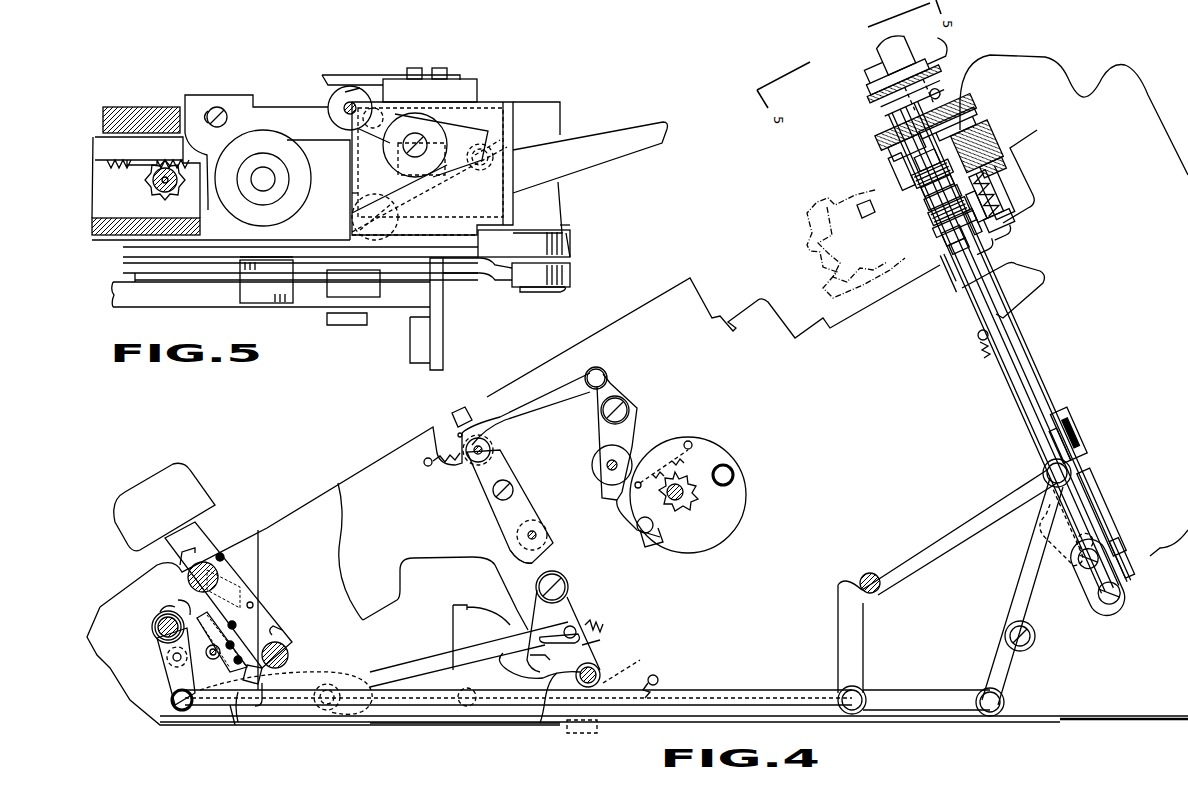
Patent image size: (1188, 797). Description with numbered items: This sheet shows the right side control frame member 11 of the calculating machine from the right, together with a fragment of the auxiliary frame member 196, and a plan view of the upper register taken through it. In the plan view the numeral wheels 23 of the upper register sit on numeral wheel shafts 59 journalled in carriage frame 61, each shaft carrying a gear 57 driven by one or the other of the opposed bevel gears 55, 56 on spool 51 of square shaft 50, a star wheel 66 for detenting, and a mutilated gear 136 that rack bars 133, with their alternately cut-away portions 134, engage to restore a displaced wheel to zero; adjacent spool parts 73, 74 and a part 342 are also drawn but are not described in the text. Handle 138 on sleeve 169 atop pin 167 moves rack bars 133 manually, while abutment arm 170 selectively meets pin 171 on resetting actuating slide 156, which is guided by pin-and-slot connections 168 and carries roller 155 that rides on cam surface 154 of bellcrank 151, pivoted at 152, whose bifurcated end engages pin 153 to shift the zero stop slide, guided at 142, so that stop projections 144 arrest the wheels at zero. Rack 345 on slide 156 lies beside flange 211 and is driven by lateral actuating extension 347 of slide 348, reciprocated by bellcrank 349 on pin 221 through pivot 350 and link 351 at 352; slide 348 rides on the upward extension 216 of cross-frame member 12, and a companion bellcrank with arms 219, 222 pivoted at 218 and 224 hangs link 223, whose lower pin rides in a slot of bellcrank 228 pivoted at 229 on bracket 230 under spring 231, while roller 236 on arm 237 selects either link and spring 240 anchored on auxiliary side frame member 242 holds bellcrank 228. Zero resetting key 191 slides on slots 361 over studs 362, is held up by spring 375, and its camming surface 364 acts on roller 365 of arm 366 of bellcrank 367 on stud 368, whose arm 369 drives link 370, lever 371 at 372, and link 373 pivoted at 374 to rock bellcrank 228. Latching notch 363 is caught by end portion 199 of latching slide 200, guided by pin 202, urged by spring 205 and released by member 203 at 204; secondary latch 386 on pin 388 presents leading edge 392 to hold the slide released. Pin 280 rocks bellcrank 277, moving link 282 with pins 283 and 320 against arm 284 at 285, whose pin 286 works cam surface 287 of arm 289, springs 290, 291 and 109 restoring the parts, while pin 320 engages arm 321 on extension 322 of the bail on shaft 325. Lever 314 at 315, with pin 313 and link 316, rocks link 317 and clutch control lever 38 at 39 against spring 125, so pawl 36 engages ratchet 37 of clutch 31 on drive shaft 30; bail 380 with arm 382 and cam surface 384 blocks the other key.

In FIG. 5, the right side control frame member 11 is at (436, 320).
In FIG. 4, the right side control frame member 11 is at (256, 535).
In FIG. 5, the cross-frame member 12 is at (131, 300).
In FIG. 4, the cross-frame member 12 is at (926, 262).
In FIG. 5, the numeral wheels 23 is at (299, 204).
In FIG. 4, the numeral wheels 23 is at (885, 96).
In FIG. 4, the transverse drive shaft 30 is at (684, 492).
In FIG. 4, the clutch 31 is at (734, 455).
In FIG. 4, the clutch pawl 36 is at (618, 531).
In FIG. 4, the ratchet 37 is at (684, 478).
In FIG. 4, the clutch control lever 38 is at (630, 418).
In FIG. 4, the pivot 39 is at (622, 405).
In FIG. 4, the square shaft 50 is at (1013, 170).
In FIG. 4, the spool 51 is at (951, 195).
In FIG. 4, the bevel gear 55 is at (950, 215).
In FIG. 4, the bevel gear 56 is at (975, 193).
In FIG. 4, the numeral wheel gear 57 is at (968, 175).
In FIG. 5, the numeral wheel shaft 59 is at (165, 193).
In FIG. 4, the numeral wheel shaft 59 is at (905, 155).
In FIG. 5, the carriage frame 61 is at (540, 112).
In FIG. 4, the carriage frame 61 is at (960, 132).
In FIG. 4, the star wheel 66 is at (975, 145).
In FIG. 4, the lip 73 is at (985, 205).
In FIG. 4, the lip 74 is at (985, 220).
In FIG. 4, the spring 109 is at (466, 694).
In FIG. 4, the spring 125 is at (450, 461).
In FIG. 5, the rack bars 133 is at (138, 165).
In FIG. 4, the rack bars 133 is at (951, 118).
In FIG. 5, the cut-away portions 134 is at (157, 152).
In FIG. 5, the mutilated gear 136 is at (150, 190).
In FIG. 4, the mutilated gear 136 is at (893, 146).
In FIG. 5, the handle 138 is at (478, 118).
In FIG. 4, the handle 138 is at (901, 58).
In FIG. 5, the pin-and-slot connection 142 is at (221, 108).
In FIG. 5, the stop projection 144 is at (208, 196).
In FIG. 5, the bellcrank 151 is at (352, 193).
In FIG. 5, the pivot 152 is at (398, 215).
In FIG. 5, the pin 153 is at (357, 130).
In FIG. 5, the cam surface 154 is at (500, 140).
In FIG. 5, the roller 155 is at (480, 168).
In FIG. 5, the resetting actuating slide 156 is at (497, 212).
In FIG. 4, the resetting actuating slide 156 is at (878, 108).
In FIG. 4, the pin 167 is at (949, 108).
In FIG. 4, the pin-and-slot connections 168 is at (886, 140).
In FIG. 4, the sleeve 169 is at (918, 70).
In FIG. 5, the abutment arm 170 is at (378, 145).
In FIG. 4, the abutment arm 170 is at (926, 80).
In FIG. 5, the pin 171 is at (347, 105).
In FIG. 4, the pin 171 is at (936, 92).
In FIG. 4, the zero resetting key 191 is at (200, 481).
In FIG. 4, the auxiliary frame member 196 is at (316, 501).
In FIG. 4, the end portion 199 is at (273, 729).
In FIG. 4, the latching slide 200 is at (414, 726).
In FIG. 4, the pin 202 is at (329, 680).
In FIG. 4, the latch-releasing member 203 is at (1040, 607).
In FIG. 4, the pivot 204 is at (1033, 642).
In FIG. 4, the spring 205 is at (645, 678).
In FIG. 5, the flange 211 is at (176, 298).
In FIG. 4, the upwardly extended portion 216 is at (920, 225).
In FIG. 5, the pivot 218 is at (263, 304).
In FIG. 5, the arm 219 is at (300, 305).
In FIG. 4, the pin 221 is at (946, 275).
In FIG. 5, the arm 222 is at (483, 274).
In FIG. 5, the link 223 is at (570, 275).
In FIG. 4, the link 223 is at (961, 285).
In FIG. 5, the pivot 224 is at (570, 285).
In FIG. 4, the bellcrank 228 is at (1086, 485).
In FIG. 4, the pivot 229 is at (1135, 536).
In FIG. 4, the bracket 230 is at (1124, 596).
In FIG. 4, the spring 231 is at (984, 346).
In FIG. 4, the roller 236 is at (1061, 430).
In FIG. 4, the arm 237 is at (1068, 442).
In FIG. 4, the spring 240 is at (1116, 520).
In FIG. 4, the auxiliary side frame member 242 is at (1039, 306).
In FIG. 4, the bellcrank 277 is at (162, 612).
In FIG. 4, the pin 280 is at (236, 596).
In FIG. 4, the link 282 is at (406, 629).
In FIG. 4, the pin 283 is at (573, 628).
In FIG. 4, the arm 284 is at (582, 648).
In FIG. 4, the pivot 285 is at (562, 590).
In FIG. 4, the pin 286 is at (600, 672).
In FIG. 4, the cam surface 287 is at (541, 724).
In FIG. 4, the arm 289 is at (453, 614).
In FIG. 4, the spring 290 is at (580, 658).
In FIG. 4, the spring 291 is at (600, 624).
In FIG. 4, the pin 313 is at (536, 535).
In FIG. 4, the lever 314 is at (520, 498).
In FIG. 4, the pivot 315 is at (509, 490).
In FIG. 4, the link 316 is at (540, 554).
In FIG. 4, the link 317 is at (540, 395).
In FIG. 4, the pin 320 is at (533, 645).
In FIG. 4, the arm 321 is at (505, 674).
In FIG. 4, the lateral extension 322 is at (561, 735).
In FIG. 4, the shaft 325 is at (600, 684).
In FIG. 4, the spring 342 is at (1104, 505).
In FIG. 5, the rack 345 is at (236, 226).
In FIG. 4, the lateral actuating extension 347 is at (895, 170).
In FIG. 5, the slide 348 is at (135, 278).
In FIG. 4, the slide 348 is at (906, 196).
In FIG. 5, the bellcrank 349 is at (485, 256).
In FIG. 4, the bellcrank 349 is at (925, 240).
In FIG. 5, the pivotal connection 350 is at (287, 246).
In FIG. 4, the pivotal connection 350 is at (913, 210).
In FIG. 5, the link 351 is at (570, 247).
In FIG. 4, the link 351 is at (968, 250).
In FIG. 5, the pivot 352 is at (566, 229).
In FIG. 4, the pivot 352 is at (958, 240).
In FIG. 4, the slots 361 is at (197, 548).
In FIG. 4, the studs 362 is at (224, 558).
In FIG. 4, the latching notch 363 is at (262, 706).
In FIG. 4, the camming surface 364 is at (245, 678).
In FIG. 4, the roller 365 is at (212, 660).
In FIG. 4, the arm 366 is at (190, 598).
In FIG. 4, the bellcrank 367 is at (155, 630).
In FIG. 4, the stud 368 is at (158, 638).
In FIG. 4, the arm 369 is at (166, 677).
In FIG. 4, the link 370 is at (704, 691).
In FIG. 4, the lever 371 is at (936, 531).
In FIG. 4, the pivot 372 is at (871, 578).
In FIG. 4, the link 373 is at (1057, 513).
In FIG. 4, the pivot 374 is at (1131, 562).
In FIG. 4, the spring 375 is at (228, 573).
In FIG. 4, the bail 380 is at (183, 560).
In FIG. 4, the arm 382 is at (232, 585).
In FIG. 4, the cam surface 384 is at (254, 604).
In FIG. 4, the secondary latch 386 is at (236, 706).
In FIG. 4, the pin 388 is at (236, 628).
In FIG. 4, the leading edge 392 is at (238, 726).